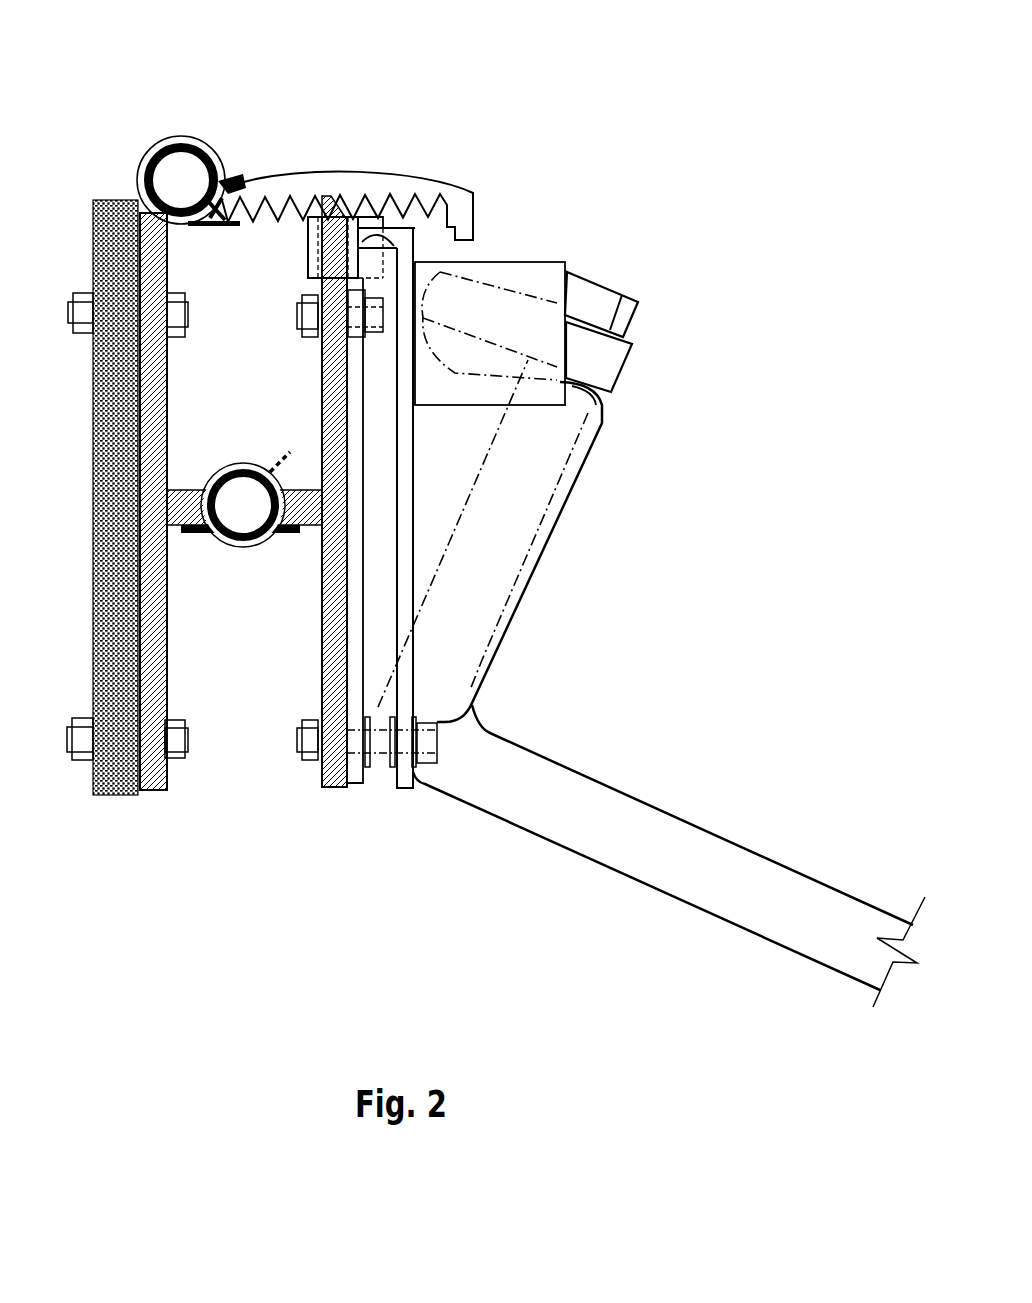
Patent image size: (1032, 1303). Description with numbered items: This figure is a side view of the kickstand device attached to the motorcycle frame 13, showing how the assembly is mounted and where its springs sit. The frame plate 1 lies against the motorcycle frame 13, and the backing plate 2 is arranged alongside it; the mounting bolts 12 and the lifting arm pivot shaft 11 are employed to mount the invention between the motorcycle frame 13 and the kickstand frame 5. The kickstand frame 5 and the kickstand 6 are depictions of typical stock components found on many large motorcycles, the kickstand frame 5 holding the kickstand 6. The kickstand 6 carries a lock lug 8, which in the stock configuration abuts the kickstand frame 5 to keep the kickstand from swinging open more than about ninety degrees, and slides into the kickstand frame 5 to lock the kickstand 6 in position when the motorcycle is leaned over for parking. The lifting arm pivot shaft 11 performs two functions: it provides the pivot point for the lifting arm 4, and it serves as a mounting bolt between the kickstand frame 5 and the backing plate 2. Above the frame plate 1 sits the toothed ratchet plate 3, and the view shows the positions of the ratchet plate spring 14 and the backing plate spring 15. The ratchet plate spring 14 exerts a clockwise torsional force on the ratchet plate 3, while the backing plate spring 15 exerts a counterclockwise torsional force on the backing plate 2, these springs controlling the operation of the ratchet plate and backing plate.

The frame plate 1 is at (170, 613).
The backing plate 2 is at (320, 685).
The ratchet plate 3 is at (440, 178).
The lifting arm 4 is at (408, 422).
The kickstand frame 5 is at (568, 510).
The kickstand 6 is at (640, 785).
The lock lug 8 is at (490, 290).
The lifting arm pivot shaft 11 is at (310, 738).
The mounting bolts 12 is at (298, 320).
The motorcycle frame 13 is at (115, 202).
The ratchet plate spring 14 is at (188, 147).
The backing plate spring 15 is at (246, 462).